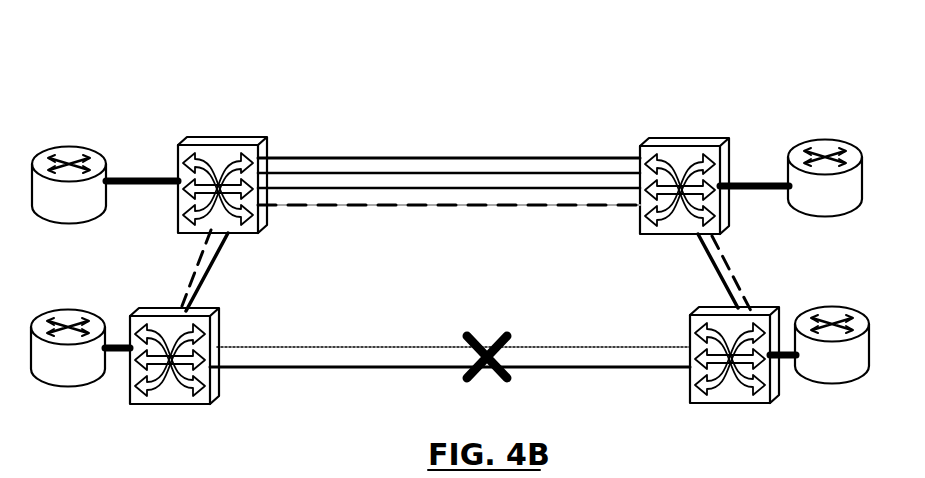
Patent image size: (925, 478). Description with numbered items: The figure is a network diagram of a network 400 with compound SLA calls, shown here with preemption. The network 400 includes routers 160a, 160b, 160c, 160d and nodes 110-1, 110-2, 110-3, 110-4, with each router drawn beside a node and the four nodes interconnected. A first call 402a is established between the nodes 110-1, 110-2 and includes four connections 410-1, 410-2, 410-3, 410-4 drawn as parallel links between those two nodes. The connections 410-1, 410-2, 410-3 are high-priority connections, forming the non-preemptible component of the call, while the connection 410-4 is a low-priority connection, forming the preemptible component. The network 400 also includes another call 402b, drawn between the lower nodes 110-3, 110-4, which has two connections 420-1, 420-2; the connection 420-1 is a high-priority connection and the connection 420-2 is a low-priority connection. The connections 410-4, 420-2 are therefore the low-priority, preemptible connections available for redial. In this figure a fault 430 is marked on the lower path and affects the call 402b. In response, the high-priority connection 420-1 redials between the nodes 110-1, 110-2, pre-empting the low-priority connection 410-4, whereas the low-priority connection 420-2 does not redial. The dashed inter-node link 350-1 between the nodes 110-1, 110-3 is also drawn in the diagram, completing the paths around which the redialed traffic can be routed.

The network 400 is at (576, 59).
The node 110-1 is at (218, 137).
The node 110-2 is at (683, 138).
The node 110-3 is at (203, 308).
The node 110-4 is at (773, 307).
The router 160a is at (79, 147).
The router 160b is at (808, 216).
The router 160c is at (84, 311).
The router 160d is at (820, 383).
The inter-switch link 350-1 is at (191, 277).
The call 402a is at (563, 143).
The call 402b is at (571, 338).
The connection 410-1 is at (332, 157).
The connection 410-2 is at (391, 172).
The connection 410-3 is at (460, 187).
The connection 410-4 is at (370, 207).
The connection 420-1 is at (424, 367).
The connection 420-2 is at (402, 346).
The fault 430 is at (500, 333).